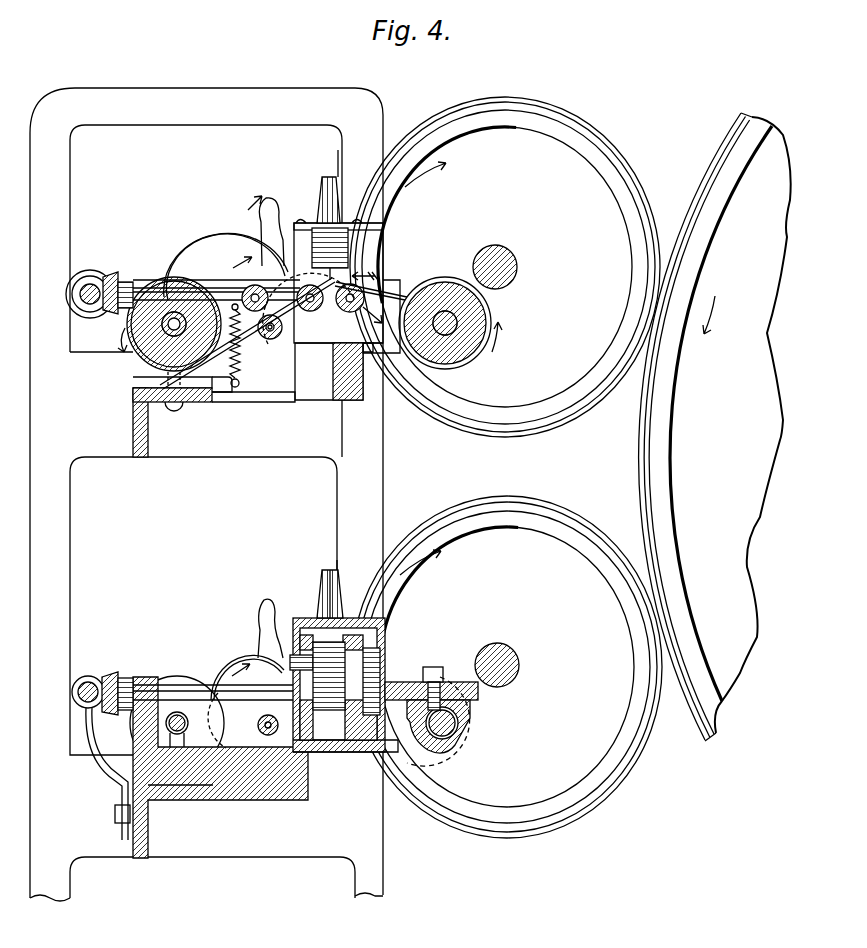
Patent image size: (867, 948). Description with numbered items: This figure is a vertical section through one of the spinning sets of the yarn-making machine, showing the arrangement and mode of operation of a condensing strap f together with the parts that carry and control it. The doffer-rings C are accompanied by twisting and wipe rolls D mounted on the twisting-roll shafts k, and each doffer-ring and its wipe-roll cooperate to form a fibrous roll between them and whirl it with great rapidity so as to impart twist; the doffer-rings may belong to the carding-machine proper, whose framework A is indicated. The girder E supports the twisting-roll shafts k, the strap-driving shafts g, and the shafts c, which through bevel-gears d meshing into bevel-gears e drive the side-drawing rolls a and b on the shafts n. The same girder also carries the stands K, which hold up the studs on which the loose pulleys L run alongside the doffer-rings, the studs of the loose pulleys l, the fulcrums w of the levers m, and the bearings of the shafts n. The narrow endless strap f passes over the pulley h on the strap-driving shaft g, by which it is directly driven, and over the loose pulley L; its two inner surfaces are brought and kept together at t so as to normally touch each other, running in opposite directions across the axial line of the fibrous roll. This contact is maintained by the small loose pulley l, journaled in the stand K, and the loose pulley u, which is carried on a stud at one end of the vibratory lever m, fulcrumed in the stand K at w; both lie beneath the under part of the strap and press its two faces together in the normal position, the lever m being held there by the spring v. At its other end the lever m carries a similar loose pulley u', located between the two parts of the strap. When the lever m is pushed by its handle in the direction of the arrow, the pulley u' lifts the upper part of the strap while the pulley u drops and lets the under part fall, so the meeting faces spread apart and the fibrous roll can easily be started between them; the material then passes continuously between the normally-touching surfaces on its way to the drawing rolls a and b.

The framework of the carding-machine A is at (206, 494).
The impression cylinder B is at (715, 427).
The doffer-rings C is at (590, 143).
The twisting and wipe rolls D is at (246, 245).
The girders E is at (158, 432).
The stands K is at (398, 692).
The loose pulleys L is at (478, 310).
The side-drawing roll a is at (332, 700).
The side-drawing roll b is at (330, 270).
The shafts c is at (96, 288).
The bevel-gears d is at (96, 282).
The bevel-gears e is at (116, 284).
The condensing strap f is at (215, 282).
The strap-driving shafts g is at (165, 346).
The pulleys h is at (181, 282).
The twisting-roll shafts k is at (271, 340).
The loose pulley l is at (354, 310).
The vibratory lever m is at (266, 635).
The shafts of the drawing-rolls n is at (266, 694).
The meeting point of strap surfaces t is at (340, 283).
The loose pulley u is at (316, 311).
The loose pulley u' is at (255, 288).
The spring v is at (240, 364).
The fulcrum w is at (282, 312).